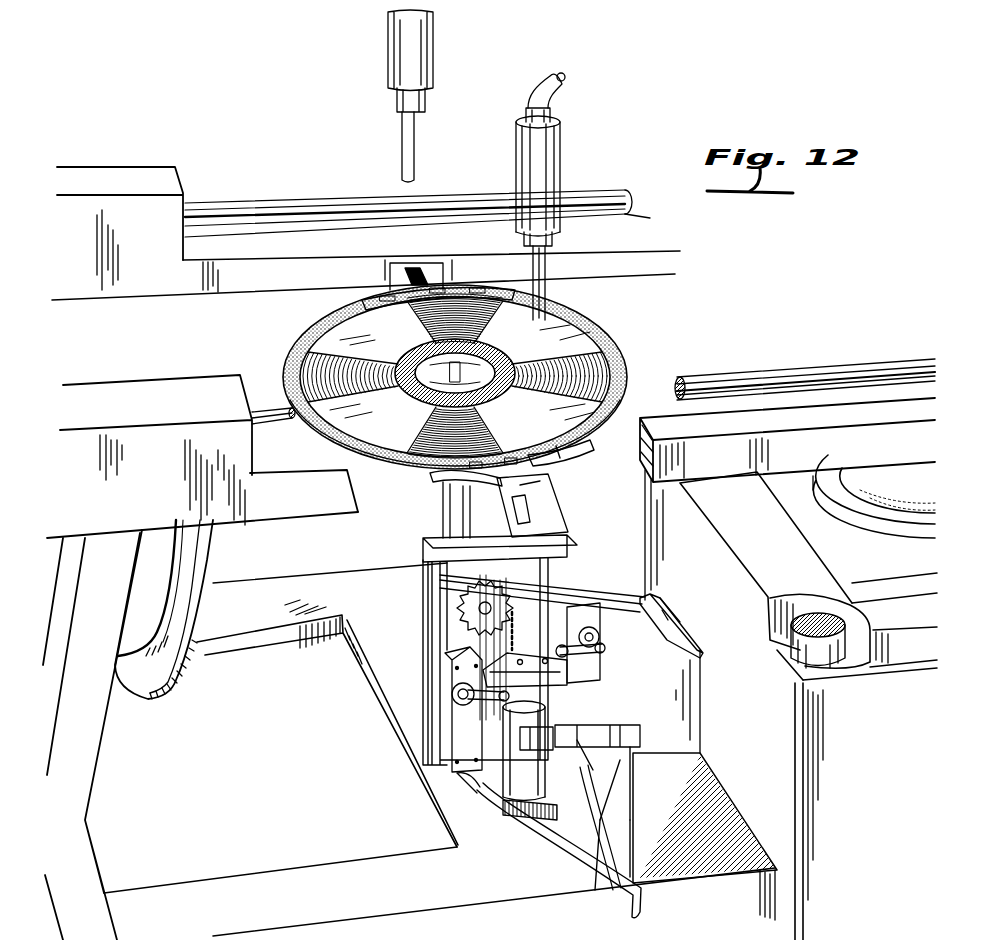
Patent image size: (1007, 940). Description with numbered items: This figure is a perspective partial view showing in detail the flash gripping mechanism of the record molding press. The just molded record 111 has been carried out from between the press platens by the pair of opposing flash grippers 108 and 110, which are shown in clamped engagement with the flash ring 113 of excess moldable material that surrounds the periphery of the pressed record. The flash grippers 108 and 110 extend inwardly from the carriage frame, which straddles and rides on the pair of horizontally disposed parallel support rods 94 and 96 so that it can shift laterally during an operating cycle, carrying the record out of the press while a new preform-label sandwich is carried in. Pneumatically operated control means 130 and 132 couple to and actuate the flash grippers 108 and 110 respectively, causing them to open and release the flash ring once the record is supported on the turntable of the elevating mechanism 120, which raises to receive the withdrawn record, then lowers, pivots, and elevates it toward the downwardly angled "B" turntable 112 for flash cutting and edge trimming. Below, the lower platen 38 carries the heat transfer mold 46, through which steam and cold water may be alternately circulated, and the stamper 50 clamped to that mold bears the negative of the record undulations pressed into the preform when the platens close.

The lower platen 38 is at (805, 507).
The heat transfer mold 46 is at (893, 556).
The stamper 50 is at (877, 490).
The support rod 94 is at (778, 378).
The support rod 96 is at (324, 205).
The flash gripper 108 is at (560, 452).
The flash gripper 110 is at (380, 292).
The just molded record 111 is at (345, 326).
The "B" turntable 112 is at (195, 668).
The flash ring 113 is at (302, 356).
The elevating mechanism 120 is at (560, 603).
The pneumatically operated control means 130 is at (546, 168).
The pneumatically operated control means 132 is at (400, 47).